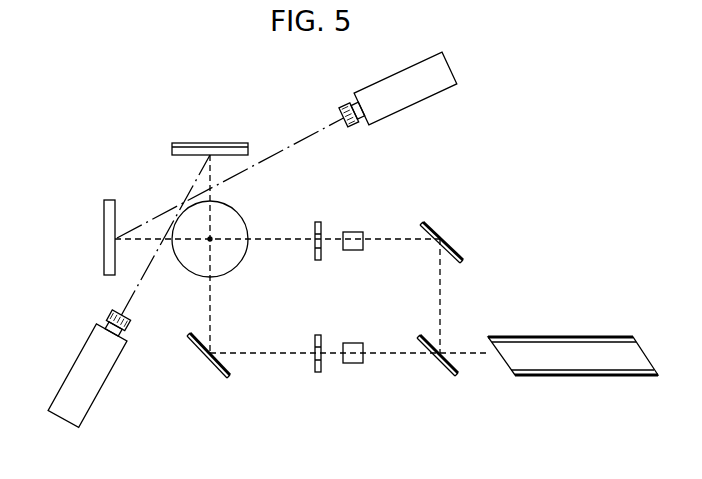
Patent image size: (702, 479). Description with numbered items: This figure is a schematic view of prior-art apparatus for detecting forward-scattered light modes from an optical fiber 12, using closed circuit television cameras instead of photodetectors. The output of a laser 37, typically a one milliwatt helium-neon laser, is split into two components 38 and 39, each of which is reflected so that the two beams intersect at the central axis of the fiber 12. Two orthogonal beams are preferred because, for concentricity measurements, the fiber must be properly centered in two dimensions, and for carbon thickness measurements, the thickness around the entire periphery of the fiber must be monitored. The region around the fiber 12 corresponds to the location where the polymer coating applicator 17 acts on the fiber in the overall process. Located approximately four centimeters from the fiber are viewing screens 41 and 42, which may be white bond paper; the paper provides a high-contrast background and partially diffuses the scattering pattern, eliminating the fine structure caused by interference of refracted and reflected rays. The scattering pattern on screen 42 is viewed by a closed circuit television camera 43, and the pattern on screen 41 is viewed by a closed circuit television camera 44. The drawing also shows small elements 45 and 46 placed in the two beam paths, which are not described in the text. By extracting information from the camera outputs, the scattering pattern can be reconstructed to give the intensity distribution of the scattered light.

The fiber 12 is at (211, 240).
The polymer coating applicator 17 is at (238, 202).
The laser 37 is at (615, 352).
The first beam component 38 is at (442, 293).
The second beam component 39 is at (413, 357).
The viewing screen 41 is at (193, 148).
The viewing screen 42 is at (110, 232).
The closed circuit television camera 43 is at (438, 85).
The closed circuit television camera 44 is at (102, 385).
The shutter 45 is at (352, 232).
The shutter 46 is at (353, 363).